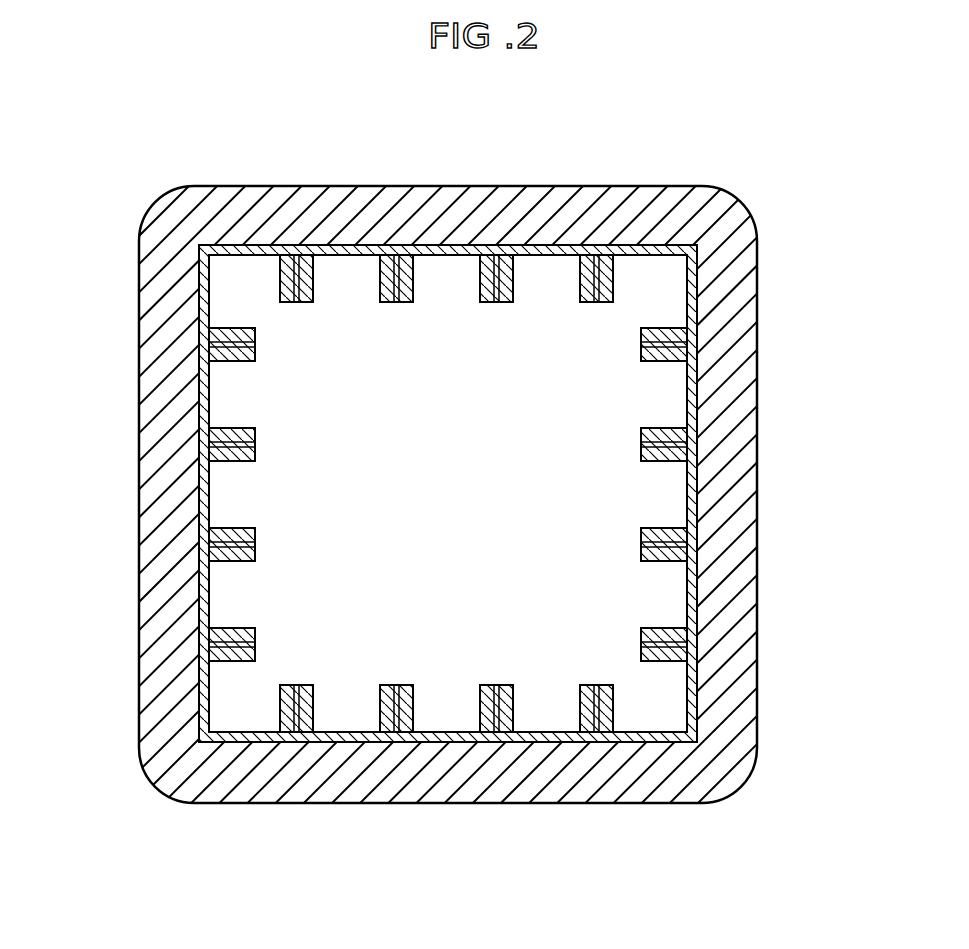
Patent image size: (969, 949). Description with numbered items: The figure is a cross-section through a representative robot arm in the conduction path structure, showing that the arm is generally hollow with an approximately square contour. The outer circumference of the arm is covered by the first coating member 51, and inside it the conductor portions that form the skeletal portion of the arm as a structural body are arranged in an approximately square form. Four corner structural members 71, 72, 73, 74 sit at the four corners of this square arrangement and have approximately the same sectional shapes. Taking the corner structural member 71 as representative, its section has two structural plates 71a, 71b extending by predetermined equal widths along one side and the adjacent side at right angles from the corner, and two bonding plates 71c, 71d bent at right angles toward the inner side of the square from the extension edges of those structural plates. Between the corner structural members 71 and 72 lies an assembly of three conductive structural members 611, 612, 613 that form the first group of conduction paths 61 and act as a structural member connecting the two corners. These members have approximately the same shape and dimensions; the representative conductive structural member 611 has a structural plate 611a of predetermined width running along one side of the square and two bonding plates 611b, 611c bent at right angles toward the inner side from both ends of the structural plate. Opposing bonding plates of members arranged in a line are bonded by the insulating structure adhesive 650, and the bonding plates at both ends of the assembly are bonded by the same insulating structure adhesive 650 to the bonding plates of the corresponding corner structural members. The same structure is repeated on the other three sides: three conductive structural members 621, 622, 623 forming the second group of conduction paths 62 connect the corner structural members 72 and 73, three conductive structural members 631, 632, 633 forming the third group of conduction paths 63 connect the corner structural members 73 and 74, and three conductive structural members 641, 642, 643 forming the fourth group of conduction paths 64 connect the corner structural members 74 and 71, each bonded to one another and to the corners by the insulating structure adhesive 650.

The first coating member 51 is at (688, 190).
The first group of conduction paths 61 is at (195, 493).
The conductive structural member 611 is at (218, 639).
The structural plate 611a is at (210, 602).
The bonding plate 611b is at (214, 630).
The bonding plate 611c is at (240, 560).
The conductive structural member 612 is at (200, 493).
The conductive structural member 613 is at (200, 397).
The second group of conduction paths 62 is at (448, 175).
The conductive structural member 621 is at (345, 245).
The conductive structural member 622 is at (445, 245).
The conductive structural member 623 is at (602, 195).
The third group of conduction paths 63 is at (786, 493).
The conductive structural member 631 is at (697, 393).
The conductive structural member 632 is at (697, 491).
The conductive structural member 633 is at (757, 651).
The fourth group of conduction paths 64 is at (448, 816).
The conductive structural member 641 is at (594, 795).
The conductive structural member 642 is at (448, 742).
The conductive structural member 643 is at (350, 742).
The insulating structure adhesive 650 is at (397, 302).
The corner structural member 71 is at (183, 749).
The structural plate 71a is at (245, 735).
The structural plate 71b is at (207, 697).
The bonding plate 71c is at (280, 707).
The bonding plate 71d is at (233, 661).
The corner structural member 72 is at (217, 248).
The corner structural member 73 is at (698, 270).
The corner structural member 74 is at (670, 742).